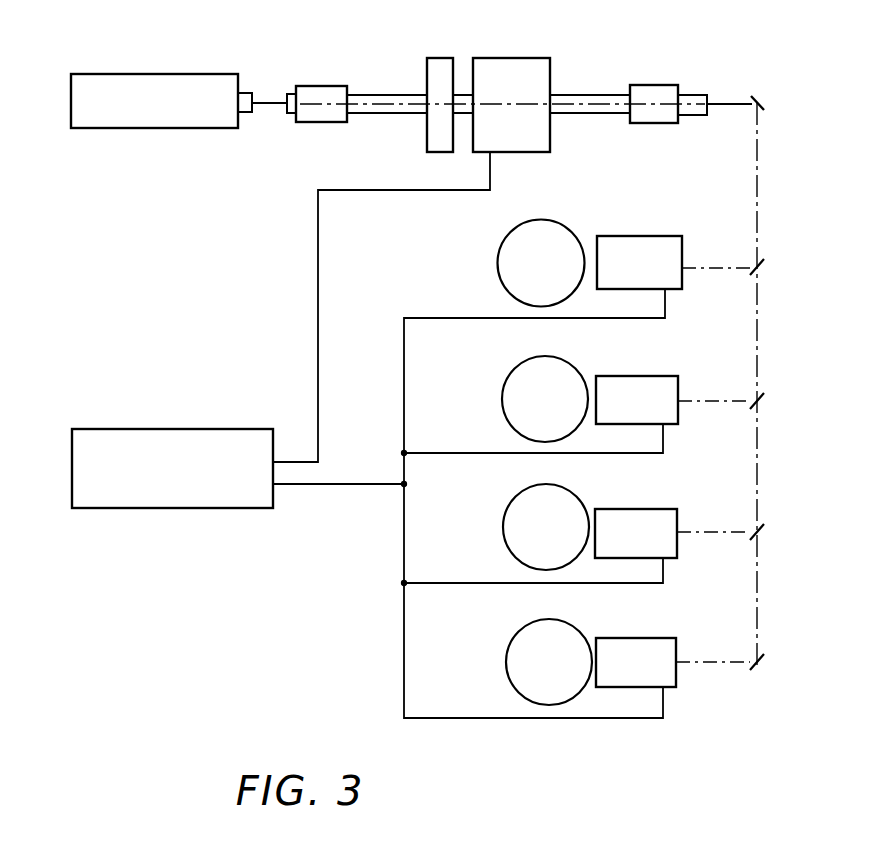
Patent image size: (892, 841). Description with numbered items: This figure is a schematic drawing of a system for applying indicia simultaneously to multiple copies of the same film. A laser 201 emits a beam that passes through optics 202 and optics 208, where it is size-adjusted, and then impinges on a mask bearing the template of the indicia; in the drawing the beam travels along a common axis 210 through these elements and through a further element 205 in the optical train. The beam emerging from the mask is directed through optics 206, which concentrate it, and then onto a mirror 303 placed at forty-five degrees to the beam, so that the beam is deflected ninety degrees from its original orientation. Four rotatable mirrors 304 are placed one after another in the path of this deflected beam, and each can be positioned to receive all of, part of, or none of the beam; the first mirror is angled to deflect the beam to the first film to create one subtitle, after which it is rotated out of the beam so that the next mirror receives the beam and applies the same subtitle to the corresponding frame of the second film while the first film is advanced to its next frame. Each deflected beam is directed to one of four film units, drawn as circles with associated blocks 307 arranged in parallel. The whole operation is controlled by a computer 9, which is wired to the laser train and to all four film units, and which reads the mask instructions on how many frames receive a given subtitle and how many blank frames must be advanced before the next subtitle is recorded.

The laser 201 is at (217, 71).
The optics 202 is at (337, 82).
The optical axis shaft 210 is at (409, 90).
The optics 208 is at (443, 56).
The optical element 205 is at (517, 56).
The optics 206 is at (656, 82).
The mirror 303 is at (762, 90).
The mirrors 304 is at (751, 258).
The detector 307 is at (646, 235).
The computer 9 is at (179, 424).